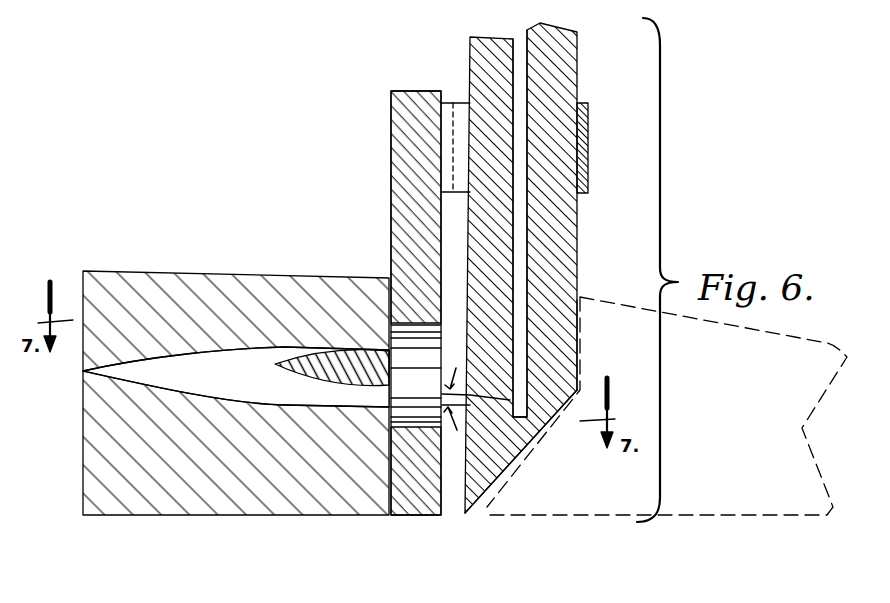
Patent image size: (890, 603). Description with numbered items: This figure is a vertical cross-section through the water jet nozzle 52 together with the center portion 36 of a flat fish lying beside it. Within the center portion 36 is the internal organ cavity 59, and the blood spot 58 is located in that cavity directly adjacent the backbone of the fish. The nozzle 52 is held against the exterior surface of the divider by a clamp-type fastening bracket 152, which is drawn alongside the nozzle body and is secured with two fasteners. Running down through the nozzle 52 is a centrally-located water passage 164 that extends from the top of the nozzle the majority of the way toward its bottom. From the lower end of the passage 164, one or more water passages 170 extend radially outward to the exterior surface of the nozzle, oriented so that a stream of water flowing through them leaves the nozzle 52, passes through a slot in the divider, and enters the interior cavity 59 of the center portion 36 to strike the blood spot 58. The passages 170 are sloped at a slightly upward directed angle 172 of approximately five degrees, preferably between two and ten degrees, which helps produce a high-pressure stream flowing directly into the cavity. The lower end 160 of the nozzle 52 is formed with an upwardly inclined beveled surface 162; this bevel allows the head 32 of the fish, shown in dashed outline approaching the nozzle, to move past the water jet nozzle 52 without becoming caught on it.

The head 32 is at (710, 518).
The center portion 36 is at (163, 272).
The water jet nozzle 52 is at (578, 65).
The blood spot 58 is at (332, 363).
The internal organ cavity 59 is at (203, 372).
The clamp-type fastening bracket 152 is at (588, 137).
The lower end 160 is at (573, 350).
The beveled surface 162 is at (508, 473).
The water passage 164 is at (520, 67).
The water passages 170 is at (500, 403).
The upward directed angle 172 is at (447, 430).